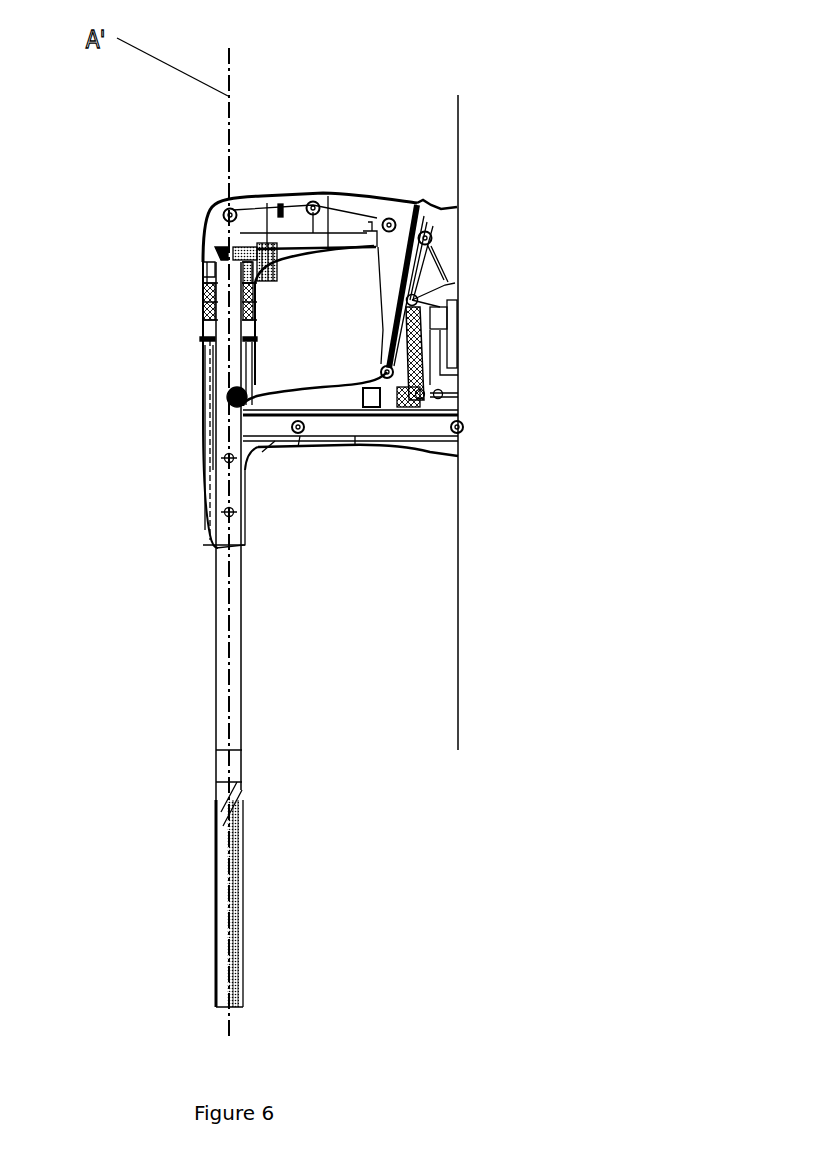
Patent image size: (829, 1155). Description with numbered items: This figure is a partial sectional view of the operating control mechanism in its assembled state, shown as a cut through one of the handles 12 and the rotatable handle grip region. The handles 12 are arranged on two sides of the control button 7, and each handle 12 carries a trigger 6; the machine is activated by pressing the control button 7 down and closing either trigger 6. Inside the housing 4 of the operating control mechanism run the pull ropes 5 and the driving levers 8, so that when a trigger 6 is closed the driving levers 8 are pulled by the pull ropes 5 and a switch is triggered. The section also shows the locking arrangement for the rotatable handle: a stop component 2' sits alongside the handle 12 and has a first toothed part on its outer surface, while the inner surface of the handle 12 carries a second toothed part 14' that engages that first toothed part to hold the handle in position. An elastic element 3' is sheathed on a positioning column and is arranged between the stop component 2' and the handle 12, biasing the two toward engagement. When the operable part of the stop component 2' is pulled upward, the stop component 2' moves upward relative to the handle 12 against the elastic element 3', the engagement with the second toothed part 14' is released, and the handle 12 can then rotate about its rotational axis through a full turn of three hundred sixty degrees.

The handle 12 is at (213, 205).
The control button 7 is at (415, 205).
The trigger 6 is at (299, 264).
The driving lever 8 is at (427, 410).
The pull rope 5 is at (321, 415).
The housing 4 is at (205, 440).
The stop component 2' is at (154, 405).
The second toothed part 14' is at (160, 282).
The elastic element 3' is at (180, 245).